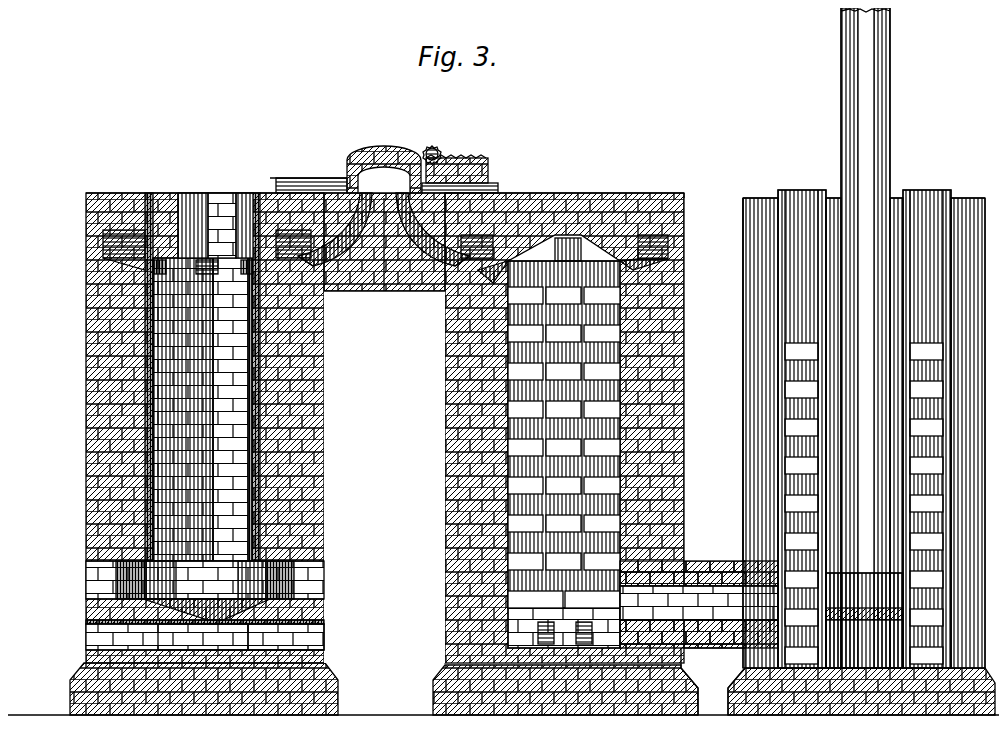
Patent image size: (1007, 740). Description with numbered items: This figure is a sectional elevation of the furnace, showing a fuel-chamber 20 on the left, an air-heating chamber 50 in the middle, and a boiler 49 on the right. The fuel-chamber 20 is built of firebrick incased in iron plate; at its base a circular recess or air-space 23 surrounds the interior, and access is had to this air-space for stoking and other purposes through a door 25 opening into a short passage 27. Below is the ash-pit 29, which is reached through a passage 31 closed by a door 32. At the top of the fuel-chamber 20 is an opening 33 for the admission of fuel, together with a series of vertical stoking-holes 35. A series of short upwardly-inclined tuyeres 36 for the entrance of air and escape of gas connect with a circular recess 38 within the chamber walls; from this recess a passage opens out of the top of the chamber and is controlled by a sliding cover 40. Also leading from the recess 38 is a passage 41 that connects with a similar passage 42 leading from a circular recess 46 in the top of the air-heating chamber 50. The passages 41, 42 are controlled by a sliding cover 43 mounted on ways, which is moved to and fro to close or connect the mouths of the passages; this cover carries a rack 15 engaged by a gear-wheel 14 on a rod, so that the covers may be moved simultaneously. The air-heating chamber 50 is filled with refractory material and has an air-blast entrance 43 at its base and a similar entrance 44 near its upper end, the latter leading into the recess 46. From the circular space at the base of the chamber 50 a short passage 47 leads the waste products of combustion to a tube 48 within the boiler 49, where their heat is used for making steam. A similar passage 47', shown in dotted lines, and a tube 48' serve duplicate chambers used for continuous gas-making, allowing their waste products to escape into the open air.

The gear-wheel 14 is at (438, 147).
The rack 15 is at (455, 152).
The fuel-chamber 20 is at (202, 409).
The air-space 23 is at (268, 576).
The door 25 is at (78, 576).
The short passage 27 is at (134, 580).
The ash-pit 29 is at (203, 637).
The passage 31 is at (286, 637).
The door 32 is at (78, 633).
The opening 33 is at (203, 192).
The stoking-hole 35 is at (141, 190).
The tuyere 36 is at (232, 261).
The circular recess 38 is at (95, 233).
The sliding cover 40 is at (493, 269).
The passage 41 is at (316, 245).
The passage 42 is at (449, 240).
The sliding cover 43 is at (376, 150).
The air-blast entrance 44 is at (575, 252).
The circular recess 46 is at (660, 240).
The short passage 47 is at (699, 604).
The passage 47' is at (912, 615).
The boiler-tube 48 is at (802, 429).
The boiler-tube 48' is at (927, 429).
The boiler 49 is at (983, 430).
The air-heating chamber 50 is at (564, 421).